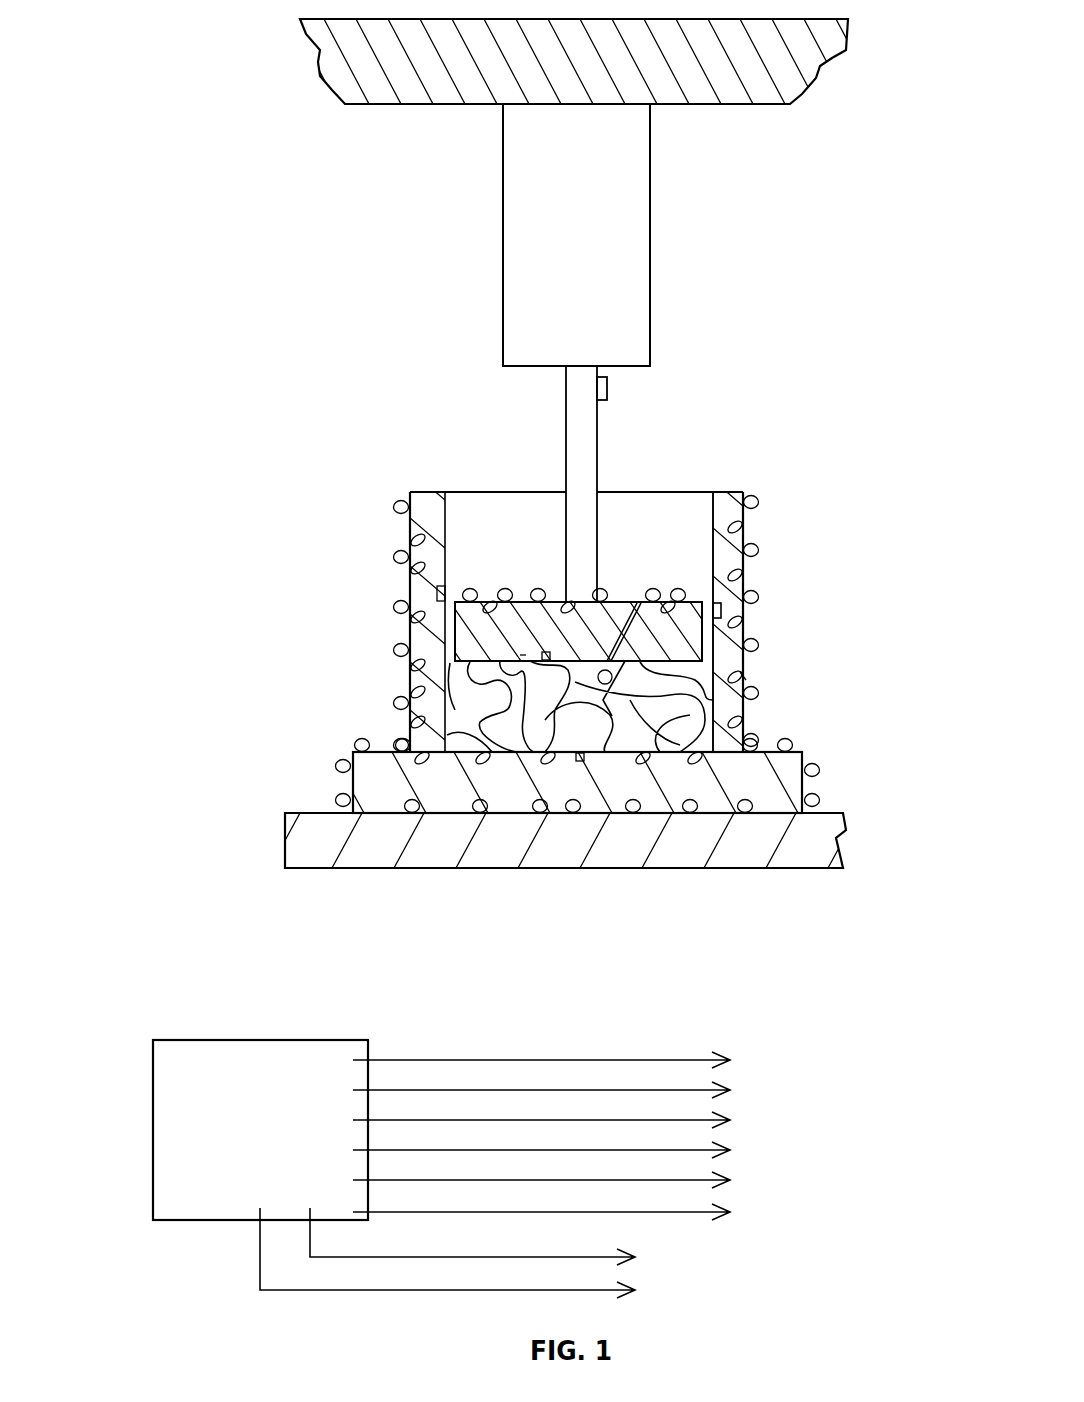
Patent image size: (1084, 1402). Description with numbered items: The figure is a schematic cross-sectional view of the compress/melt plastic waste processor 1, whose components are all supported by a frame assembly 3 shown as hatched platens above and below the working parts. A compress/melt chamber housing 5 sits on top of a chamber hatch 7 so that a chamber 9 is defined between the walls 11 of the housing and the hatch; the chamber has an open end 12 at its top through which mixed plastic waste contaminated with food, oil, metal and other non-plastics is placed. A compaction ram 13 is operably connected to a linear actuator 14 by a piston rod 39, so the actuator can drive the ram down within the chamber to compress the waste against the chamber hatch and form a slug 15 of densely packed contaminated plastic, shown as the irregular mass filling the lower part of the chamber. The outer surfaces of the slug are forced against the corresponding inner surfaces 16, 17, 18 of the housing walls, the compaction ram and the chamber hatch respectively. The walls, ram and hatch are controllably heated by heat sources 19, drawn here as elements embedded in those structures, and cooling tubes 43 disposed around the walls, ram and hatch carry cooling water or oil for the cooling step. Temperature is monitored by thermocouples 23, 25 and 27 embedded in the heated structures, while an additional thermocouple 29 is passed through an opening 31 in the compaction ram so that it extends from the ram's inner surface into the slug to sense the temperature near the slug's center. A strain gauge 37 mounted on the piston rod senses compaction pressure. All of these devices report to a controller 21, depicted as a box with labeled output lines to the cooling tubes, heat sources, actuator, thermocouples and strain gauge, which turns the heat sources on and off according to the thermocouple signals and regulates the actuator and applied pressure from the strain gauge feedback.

The compress/melt plastic waste processor 1 is at (223, 41).
The frame assembly 3 is at (838, 38).
The compress/melt chamber housing 5 is at (407, 488).
The chamber hatch 7 is at (350, 765).
The chamber 9 is at (463, 492).
The walls 11 is at (410, 590).
The open end 12 is at (517, 492).
The compaction ram 13 is at (490, 633).
The linear actuator 14 is at (632, 160).
The slug 15 is at (475, 708).
The inner surface of chamber housing walls 16 is at (712, 562).
The inner surface of compaction ram 17 is at (745, 677).
The inner surface of chamber hatch 18 is at (523, 660).
The heat sources 19 is at (410, 522).
The controller 21 is at (166, 1064).
The thermocouple 23 is at (722, 609).
The thermocouple 25 is at (540, 657).
The thermocouple 27 is at (580, 762).
The additional thermocouple 29 is at (612, 679).
The opening 31 is at (632, 603).
The strain gauge 37 is at (608, 390).
The piston rod 39 is at (565, 432).
The cooling tubes 43 is at (752, 500).